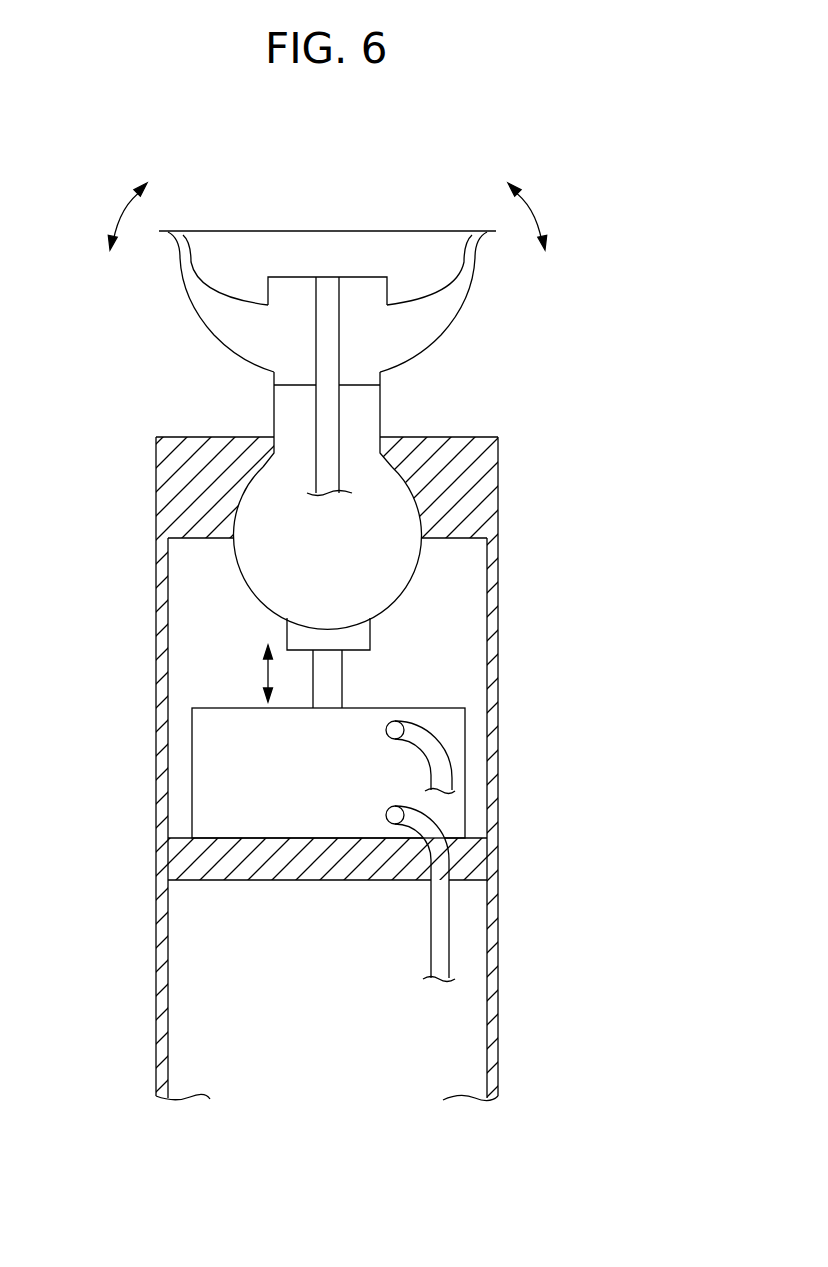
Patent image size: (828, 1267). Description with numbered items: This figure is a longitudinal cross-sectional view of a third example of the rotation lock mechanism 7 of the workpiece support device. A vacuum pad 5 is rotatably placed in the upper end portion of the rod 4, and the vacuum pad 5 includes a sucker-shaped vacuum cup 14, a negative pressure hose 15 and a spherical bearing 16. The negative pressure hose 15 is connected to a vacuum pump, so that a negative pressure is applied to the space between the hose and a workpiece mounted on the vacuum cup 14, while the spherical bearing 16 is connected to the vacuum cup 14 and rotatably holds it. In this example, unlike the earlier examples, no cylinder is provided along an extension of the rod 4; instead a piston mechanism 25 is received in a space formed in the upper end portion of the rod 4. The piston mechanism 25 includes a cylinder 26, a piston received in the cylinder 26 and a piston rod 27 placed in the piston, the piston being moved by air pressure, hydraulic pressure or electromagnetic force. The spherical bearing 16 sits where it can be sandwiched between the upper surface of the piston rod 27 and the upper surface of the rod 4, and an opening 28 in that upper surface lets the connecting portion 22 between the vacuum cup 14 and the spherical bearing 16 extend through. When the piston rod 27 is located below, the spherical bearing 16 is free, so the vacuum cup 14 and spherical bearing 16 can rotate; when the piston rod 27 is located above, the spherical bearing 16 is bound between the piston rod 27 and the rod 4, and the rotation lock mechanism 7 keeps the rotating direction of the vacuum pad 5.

The rod 4 is at (512, 1014).
The vacuum pad 5 is at (380, 194).
The rotation lock mechanism 7 is at (587, 402).
The vacuum cup 14 is at (263, 231).
The negative pressure hose 15 is at (311, 462).
The spherical bearing 16 is at (382, 590).
The connecting portion 22 is at (283, 417).
The piston mechanism 25 is at (482, 765).
The cylinder 26 is at (455, 720).
The piston rod 27 is at (343, 675).
The opening 28 is at (392, 437).